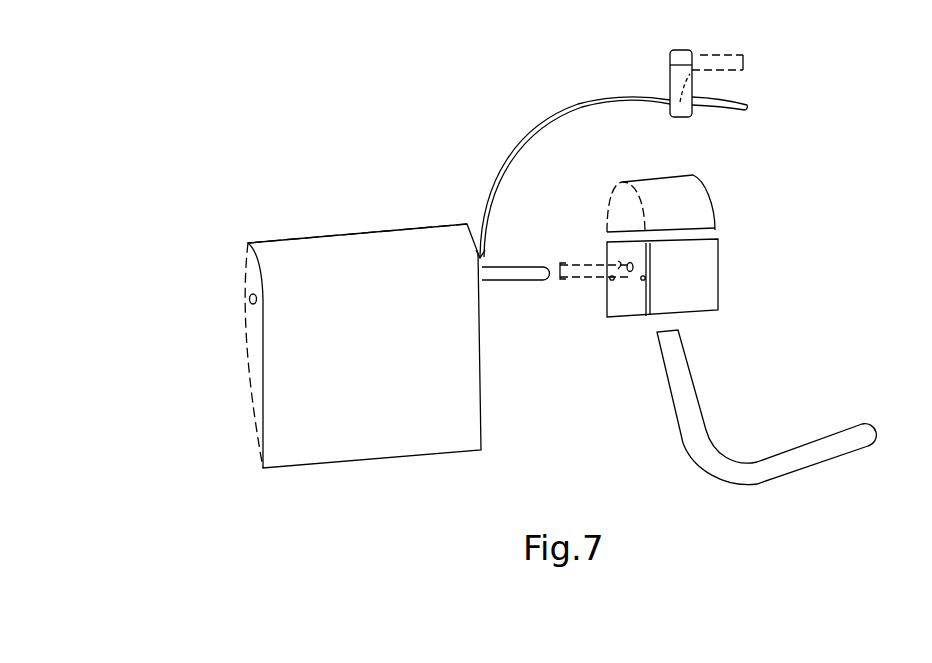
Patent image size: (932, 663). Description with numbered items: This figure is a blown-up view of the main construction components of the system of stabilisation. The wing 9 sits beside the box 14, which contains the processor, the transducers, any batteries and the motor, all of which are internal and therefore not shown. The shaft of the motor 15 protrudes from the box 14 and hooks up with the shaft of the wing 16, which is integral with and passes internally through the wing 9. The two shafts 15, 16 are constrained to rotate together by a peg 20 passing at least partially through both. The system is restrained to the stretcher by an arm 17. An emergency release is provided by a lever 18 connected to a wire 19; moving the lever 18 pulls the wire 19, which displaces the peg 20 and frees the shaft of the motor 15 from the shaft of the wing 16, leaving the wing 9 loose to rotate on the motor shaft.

The wing 9 is at (233, 347).
The box 14 is at (728, 263).
The shaft of the motor 15 is at (587, 278).
The shaft of the wing 16 is at (521, 282).
The arm 17 is at (742, 447).
The lever 18 is at (728, 115).
The wire 19 is at (518, 132).
The peg 20 is at (483, 247).